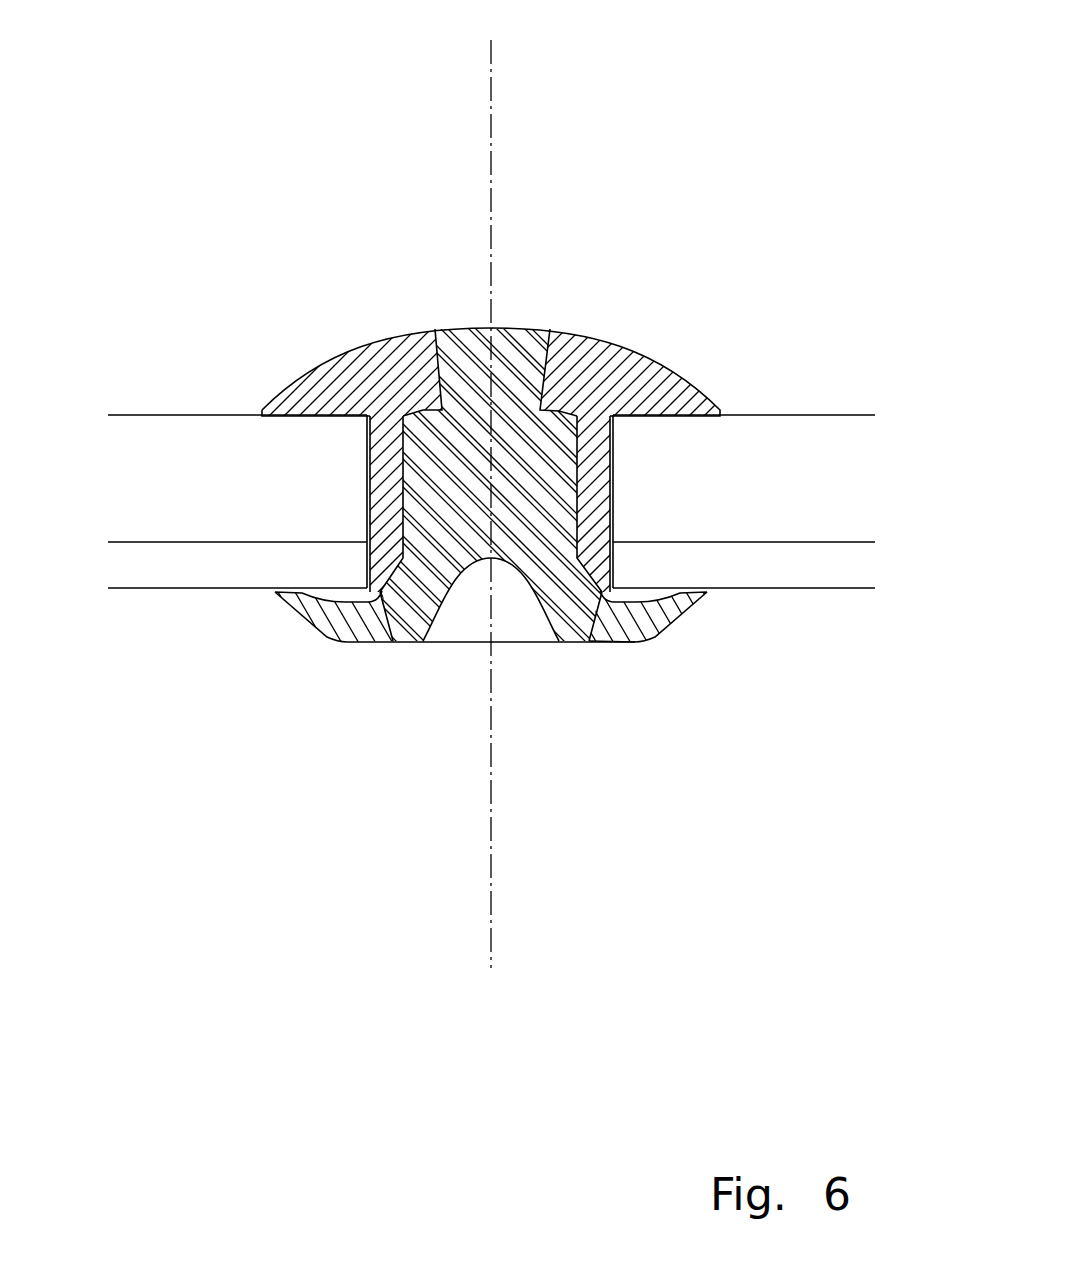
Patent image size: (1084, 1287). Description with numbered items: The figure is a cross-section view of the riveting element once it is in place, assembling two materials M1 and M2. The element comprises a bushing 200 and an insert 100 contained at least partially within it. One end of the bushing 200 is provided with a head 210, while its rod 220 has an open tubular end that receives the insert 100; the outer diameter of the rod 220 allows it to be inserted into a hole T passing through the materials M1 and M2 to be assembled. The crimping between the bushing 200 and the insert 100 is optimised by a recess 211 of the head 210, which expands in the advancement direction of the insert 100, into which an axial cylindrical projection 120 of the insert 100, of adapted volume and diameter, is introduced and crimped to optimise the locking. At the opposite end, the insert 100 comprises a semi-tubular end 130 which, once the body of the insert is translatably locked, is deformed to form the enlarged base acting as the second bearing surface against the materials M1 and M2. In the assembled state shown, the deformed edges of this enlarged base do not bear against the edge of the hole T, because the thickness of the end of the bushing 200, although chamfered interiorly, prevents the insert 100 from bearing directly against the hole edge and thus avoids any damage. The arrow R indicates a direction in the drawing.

The insert 100 is at (538, 464).
The axial cylindrical projection 120 is at (527, 341).
The semi-tubular end 130 is at (376, 632).
The bushing 200 is at (527, 454).
The head 210 is at (402, 345).
The recess 211 is at (542, 377).
The rod 220 is at (590, 502).
The material M1 is at (210, 439).
The material M2 is at (205, 573).
The hole T is at (368, 480).
The riveting direction R is at (685, 97).